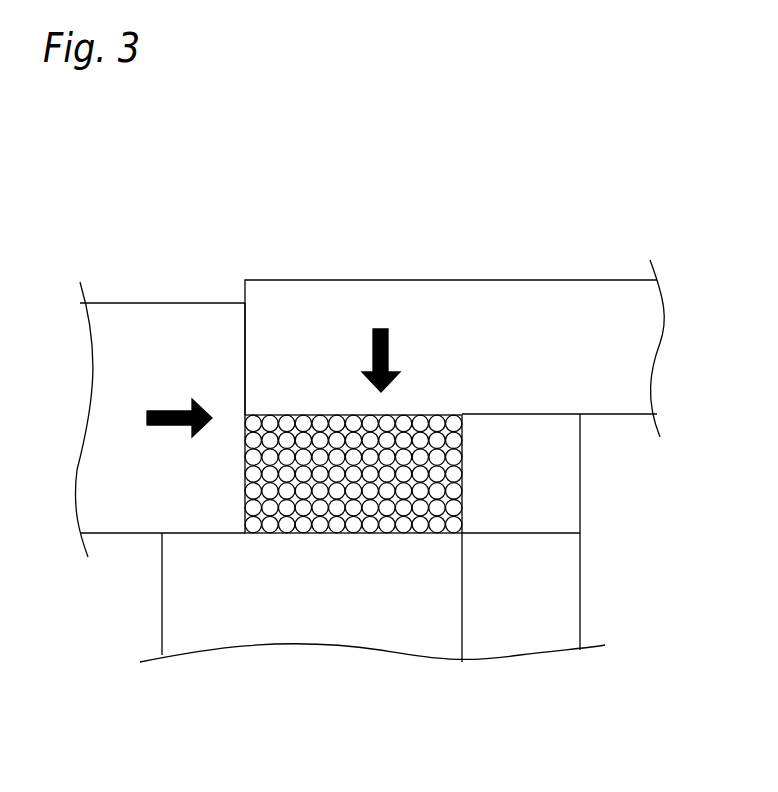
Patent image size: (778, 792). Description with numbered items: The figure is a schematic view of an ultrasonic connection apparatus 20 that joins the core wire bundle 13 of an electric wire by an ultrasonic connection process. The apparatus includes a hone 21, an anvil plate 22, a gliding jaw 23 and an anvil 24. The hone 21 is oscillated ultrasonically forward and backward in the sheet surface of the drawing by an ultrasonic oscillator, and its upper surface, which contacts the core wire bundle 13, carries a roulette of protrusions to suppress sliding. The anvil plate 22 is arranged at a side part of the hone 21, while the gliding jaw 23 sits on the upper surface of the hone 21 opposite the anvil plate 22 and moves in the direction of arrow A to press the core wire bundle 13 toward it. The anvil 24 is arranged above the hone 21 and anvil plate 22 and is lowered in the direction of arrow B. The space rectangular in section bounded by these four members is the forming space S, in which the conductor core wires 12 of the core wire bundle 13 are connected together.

The ultrasonic connection apparatus 20 is at (583, 222).
The hone 21 is at (300, 608).
The anvil plate 22 is at (558, 539).
The gliding jaw 23 is at (140, 330).
The anvil 24 is at (518, 294).
The conductor core wires 12 is at (256, 415).
The core wire bundle 13 is at (329, 412).
The forming space S is at (445, 412).